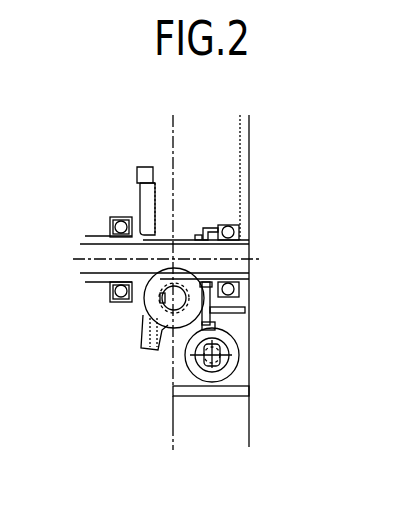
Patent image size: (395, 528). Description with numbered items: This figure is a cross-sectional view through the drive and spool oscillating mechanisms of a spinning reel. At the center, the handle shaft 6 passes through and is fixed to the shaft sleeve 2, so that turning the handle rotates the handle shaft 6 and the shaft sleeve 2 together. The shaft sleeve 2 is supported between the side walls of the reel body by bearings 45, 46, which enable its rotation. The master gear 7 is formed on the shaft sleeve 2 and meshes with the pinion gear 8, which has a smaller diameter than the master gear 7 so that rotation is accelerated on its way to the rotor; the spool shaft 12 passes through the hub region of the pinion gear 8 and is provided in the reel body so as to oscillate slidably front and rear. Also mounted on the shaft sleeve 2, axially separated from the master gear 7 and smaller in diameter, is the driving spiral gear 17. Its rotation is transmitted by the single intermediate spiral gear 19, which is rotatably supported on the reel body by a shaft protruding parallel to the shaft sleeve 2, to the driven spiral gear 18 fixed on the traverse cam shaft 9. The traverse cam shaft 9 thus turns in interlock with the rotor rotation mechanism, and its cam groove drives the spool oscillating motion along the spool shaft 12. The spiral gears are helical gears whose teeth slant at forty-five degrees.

The shaft sleeve 2 is at (167, 232).
The handle shaft 6 is at (243, 253).
The master gear 7 is at (139, 170).
The pinion gear 8 is at (164, 318).
The traverse cam shaft 9 is at (214, 362).
The spool shaft 12 is at (162, 300).
The driving spiral gear 17 is at (206, 228).
The driven spiral gear 18 is at (243, 355).
The intermediate spiral gear 19 is at (214, 318).
The bearing 45 is at (113, 222).
The bearing 46 is at (237, 228).